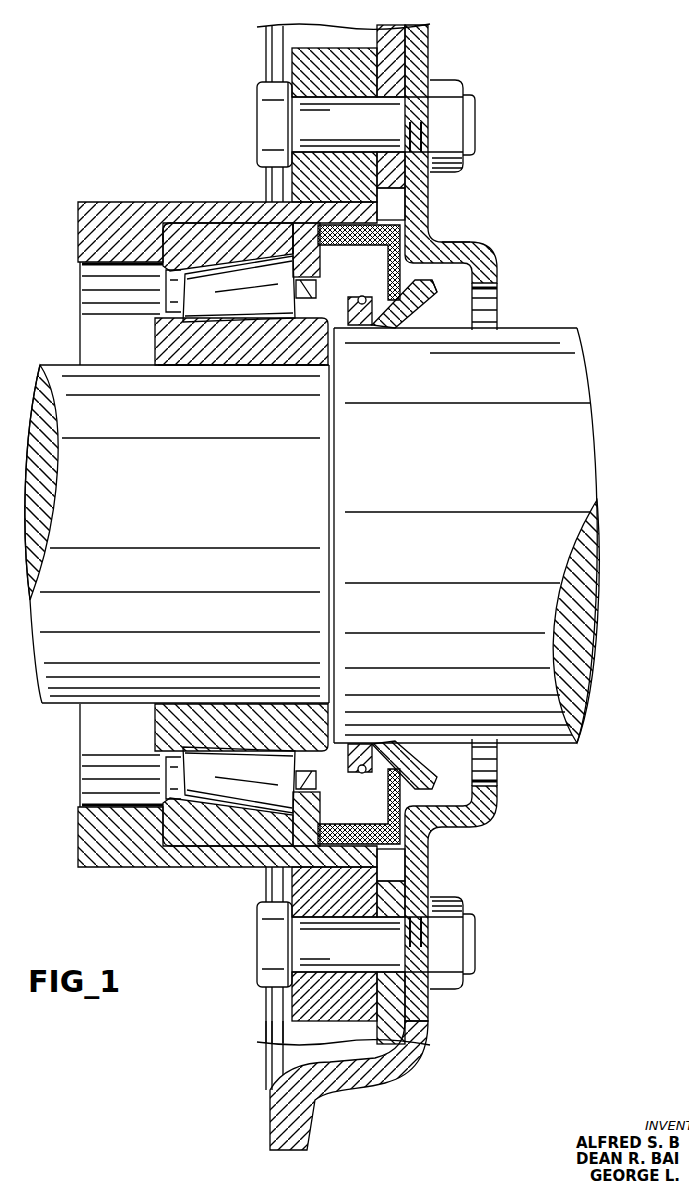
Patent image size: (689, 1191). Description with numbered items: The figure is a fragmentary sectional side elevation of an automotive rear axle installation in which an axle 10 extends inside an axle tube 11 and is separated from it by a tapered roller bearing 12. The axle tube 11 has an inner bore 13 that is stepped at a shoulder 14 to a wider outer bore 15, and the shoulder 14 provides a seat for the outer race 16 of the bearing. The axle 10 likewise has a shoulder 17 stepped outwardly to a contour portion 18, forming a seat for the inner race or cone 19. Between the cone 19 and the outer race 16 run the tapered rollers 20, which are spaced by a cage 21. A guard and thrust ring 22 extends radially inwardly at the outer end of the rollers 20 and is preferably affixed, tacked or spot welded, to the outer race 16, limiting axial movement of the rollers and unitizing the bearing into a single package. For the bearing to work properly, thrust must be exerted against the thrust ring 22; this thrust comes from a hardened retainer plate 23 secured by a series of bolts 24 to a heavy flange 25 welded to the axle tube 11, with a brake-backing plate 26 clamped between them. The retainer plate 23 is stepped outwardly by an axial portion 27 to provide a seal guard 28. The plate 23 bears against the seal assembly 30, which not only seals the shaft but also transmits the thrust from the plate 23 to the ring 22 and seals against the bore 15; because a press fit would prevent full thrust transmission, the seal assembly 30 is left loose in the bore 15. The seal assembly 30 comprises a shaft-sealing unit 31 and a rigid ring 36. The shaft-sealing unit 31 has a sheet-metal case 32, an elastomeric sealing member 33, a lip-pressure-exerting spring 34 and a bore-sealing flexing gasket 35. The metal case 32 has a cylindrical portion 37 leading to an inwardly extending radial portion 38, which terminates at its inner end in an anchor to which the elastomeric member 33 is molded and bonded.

The axle 10 is at (188, 588).
The axle tube 11 is at (140, 204).
The tapered roller bearing 12 is at (150, 346).
The inner bore 13 is at (100, 266).
The shoulder 14 is at (167, 229).
The outer bore 15 is at (210, 230).
The outer race 16 is at (240, 236).
The shoulder 17 is at (330, 524).
The contour portion 18 is at (454, 330).
The inner race or cone 19 is at (258, 357).
The tapered rollers 20 is at (183, 292).
The cage 21 is at (160, 306).
The guard and thrust ring 22 is at (312, 270).
The retainer plate 23 is at (420, 238).
The bolts 24 is at (259, 128).
The flange 25 is at (294, 72).
The brake-backing plate 26 is at (404, 49).
The axial portion 27 is at (456, 252).
The seal guard 28 is at (492, 281).
The seal assembly 30 is at (435, 283).
The shaft-sealing unit 31 is at (440, 842).
The metal case 32 is at (392, 272).
The elastomeric sealing member 33 is at (375, 328).
The lip-pressure-exerting spring 34 is at (358, 300).
The bore-sealing flexing gasket 35 is at (391, 204).
The rigid ring 36 is at (341, 824).
The cylindrical portion 37 is at (427, 877).
The radial portion 38 is at (404, 800).